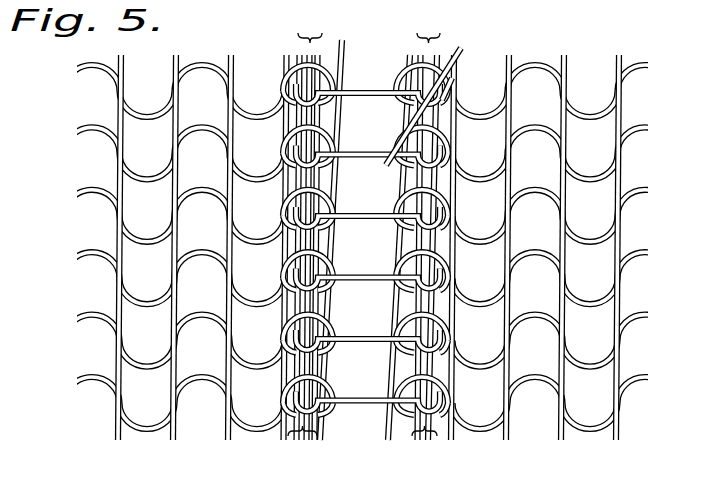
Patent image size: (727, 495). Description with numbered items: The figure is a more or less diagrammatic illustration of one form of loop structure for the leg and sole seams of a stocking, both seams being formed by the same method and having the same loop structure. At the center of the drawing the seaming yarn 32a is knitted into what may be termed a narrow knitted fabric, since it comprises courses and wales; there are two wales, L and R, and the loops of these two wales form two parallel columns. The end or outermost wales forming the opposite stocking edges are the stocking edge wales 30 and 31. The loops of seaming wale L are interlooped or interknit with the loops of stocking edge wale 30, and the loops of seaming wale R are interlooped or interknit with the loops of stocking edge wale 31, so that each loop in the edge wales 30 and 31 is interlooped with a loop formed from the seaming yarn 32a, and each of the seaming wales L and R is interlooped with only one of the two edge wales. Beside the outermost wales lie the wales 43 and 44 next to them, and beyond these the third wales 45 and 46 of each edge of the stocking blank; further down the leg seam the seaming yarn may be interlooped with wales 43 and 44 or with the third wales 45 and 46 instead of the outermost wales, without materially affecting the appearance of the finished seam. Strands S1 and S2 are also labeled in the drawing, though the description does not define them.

The stocking edge wale 30 is at (333, 453).
The stocking edge wale 31 is at (443, 453).
The seaming yarn 32a is at (366, 97).
The wale 43 is at (280, 453).
The wale 44 is at (505, 453).
The third wale 45 is at (222, 453).
The third wale 46 is at (563, 453).
The strand S1 is at (290, 59).
The strand S2 is at (290, 141).
The seaming wale L is at (305, 232).
The seaming wale R is at (426, 233).